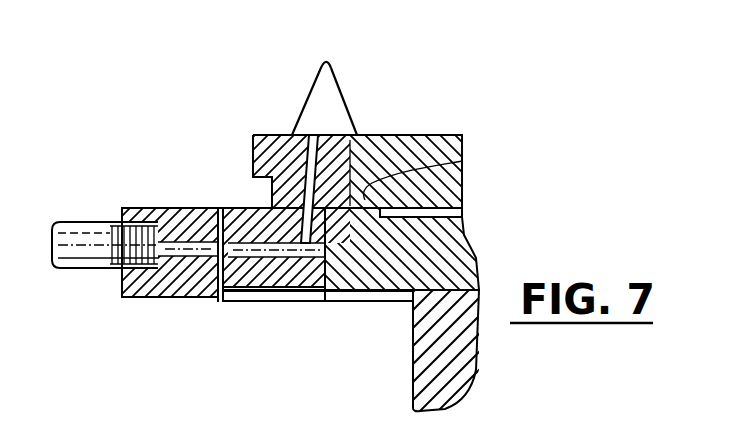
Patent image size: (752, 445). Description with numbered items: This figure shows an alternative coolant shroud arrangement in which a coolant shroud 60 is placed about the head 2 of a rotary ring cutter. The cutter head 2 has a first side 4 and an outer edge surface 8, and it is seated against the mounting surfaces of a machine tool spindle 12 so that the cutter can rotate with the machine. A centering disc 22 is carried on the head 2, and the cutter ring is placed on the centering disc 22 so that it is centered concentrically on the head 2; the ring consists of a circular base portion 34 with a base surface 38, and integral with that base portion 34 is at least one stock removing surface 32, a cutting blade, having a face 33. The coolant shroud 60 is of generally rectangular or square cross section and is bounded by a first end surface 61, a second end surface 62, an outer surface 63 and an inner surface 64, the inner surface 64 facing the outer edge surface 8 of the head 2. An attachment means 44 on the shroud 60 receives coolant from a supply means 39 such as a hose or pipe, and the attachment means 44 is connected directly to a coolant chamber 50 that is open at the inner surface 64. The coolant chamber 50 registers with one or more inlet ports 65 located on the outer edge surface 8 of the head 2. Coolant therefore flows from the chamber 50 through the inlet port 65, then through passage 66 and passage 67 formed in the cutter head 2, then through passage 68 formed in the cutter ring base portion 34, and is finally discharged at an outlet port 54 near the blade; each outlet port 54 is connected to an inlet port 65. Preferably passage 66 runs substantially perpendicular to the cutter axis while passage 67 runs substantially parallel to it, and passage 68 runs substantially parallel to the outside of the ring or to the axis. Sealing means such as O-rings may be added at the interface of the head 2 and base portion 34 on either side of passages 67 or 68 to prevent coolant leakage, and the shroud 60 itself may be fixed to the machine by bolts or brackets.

The head 2 is at (384, 270).
The first side 4 is at (465, 222).
The outer edge surface 8 is at (232, 220).
The machine tool spindle 12 is at (407, 373).
The centering disc 22 is at (410, 135).
The stock removing surface 32 is at (326, 62).
The face 33 is at (338, 102).
The circular base portion 34 is at (367, 135).
The base surface 38 is at (463, 161).
The coolant supply means 39 is at (97, 222).
The attachment means 44 is at (128, 298).
The coolant chamber 50 is at (203, 298).
The outlet port 54 is at (317, 135).
The coolant shroud 60 is at (160, 207).
The first end surface 61 is at (148, 207).
The second end surface 62 is at (165, 298).
The outer surface 63 is at (122, 278).
The inner surface 64 is at (213, 207).
The inlet port 65 is at (248, 298).
The passage 66 is at (303, 290).
The passage 67 is at (325, 301).
The passage 68 is at (273, 135).